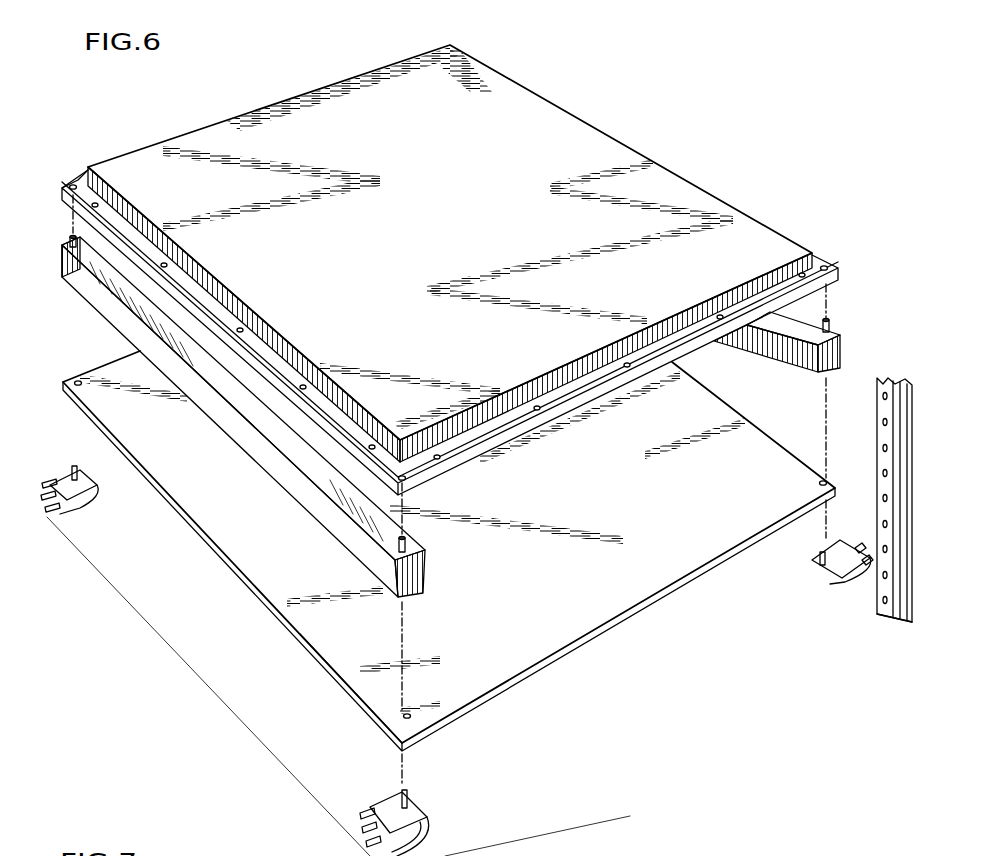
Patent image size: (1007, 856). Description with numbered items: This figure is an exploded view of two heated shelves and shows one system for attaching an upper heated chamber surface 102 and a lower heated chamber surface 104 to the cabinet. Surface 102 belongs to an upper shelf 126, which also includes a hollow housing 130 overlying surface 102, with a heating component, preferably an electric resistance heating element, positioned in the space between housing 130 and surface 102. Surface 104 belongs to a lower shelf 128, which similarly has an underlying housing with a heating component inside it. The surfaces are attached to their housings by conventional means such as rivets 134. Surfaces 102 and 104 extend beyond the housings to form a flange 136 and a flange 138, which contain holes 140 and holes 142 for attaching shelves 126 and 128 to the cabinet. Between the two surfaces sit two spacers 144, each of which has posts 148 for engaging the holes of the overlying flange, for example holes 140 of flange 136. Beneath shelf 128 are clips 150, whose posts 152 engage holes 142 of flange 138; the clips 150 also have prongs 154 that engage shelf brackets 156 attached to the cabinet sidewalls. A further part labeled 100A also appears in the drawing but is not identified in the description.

The panel assembly 100A is at (660, 528).
The upper heated chamber surface 102 is at (725, 337).
The lower heated chamber surface 104 is at (545, 638).
The shelf 126 is at (645, 98).
The shelf 128 is at (250, 608).
The hollow housing 130 is at (500, 92).
The rivets 134 is at (303, 385).
The flange 136 is at (78, 183).
The flange 138 is at (381, 728).
The holes 140 is at (90, 168).
The holes 142 is at (82, 384).
The spacers 144 is at (322, 505).
The posts 148 is at (78, 240).
The clips 150 is at (100, 497).
The posts 152 is at (78, 472).
The prongs 154 is at (68, 477).
The shelf brackets 156 is at (883, 611).